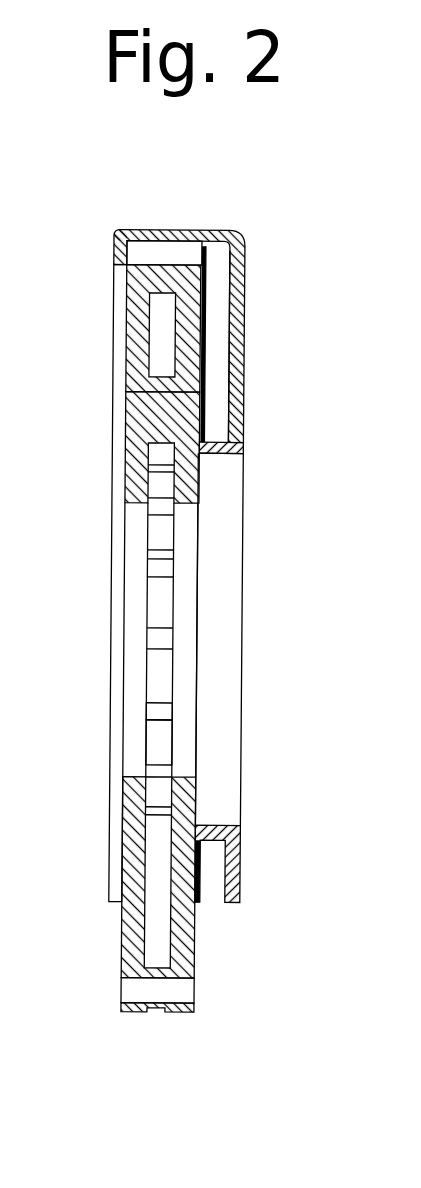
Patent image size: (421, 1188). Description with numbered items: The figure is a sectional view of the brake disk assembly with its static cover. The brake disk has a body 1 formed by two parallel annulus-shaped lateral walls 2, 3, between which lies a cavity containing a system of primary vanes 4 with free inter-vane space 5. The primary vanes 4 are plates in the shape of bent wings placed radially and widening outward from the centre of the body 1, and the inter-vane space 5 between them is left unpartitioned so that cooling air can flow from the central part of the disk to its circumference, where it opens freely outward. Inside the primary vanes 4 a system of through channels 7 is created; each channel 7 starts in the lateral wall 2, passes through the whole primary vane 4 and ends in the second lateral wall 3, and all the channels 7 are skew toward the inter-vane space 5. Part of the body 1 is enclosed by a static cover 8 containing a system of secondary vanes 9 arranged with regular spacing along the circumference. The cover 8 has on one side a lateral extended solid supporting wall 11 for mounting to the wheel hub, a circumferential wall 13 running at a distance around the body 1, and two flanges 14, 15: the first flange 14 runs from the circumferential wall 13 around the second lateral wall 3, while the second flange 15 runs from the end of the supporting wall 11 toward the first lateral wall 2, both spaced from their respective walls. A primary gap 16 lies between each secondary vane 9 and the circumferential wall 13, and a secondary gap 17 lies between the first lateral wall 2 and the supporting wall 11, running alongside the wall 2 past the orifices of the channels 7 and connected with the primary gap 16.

The body 1 is at (193, 970).
The first lateral wall 2 is at (187, 590).
The second lateral wall 3 is at (140, 623).
The primary vanes 4 is at (150, 710).
The inter-vane space 5 is at (158, 742).
The through channels 7 is at (138, 993).
The static cover 8 is at (178, 303).
The secondary vanes 9 is at (153, 252).
The supporting wall 11 is at (240, 422).
The circumferential wall 13 is at (137, 240).
The first flange 14 is at (122, 257).
The second flange 15 is at (215, 450).
The primary gap 16 is at (170, 238).
The secondary gap 17 is at (215, 382).